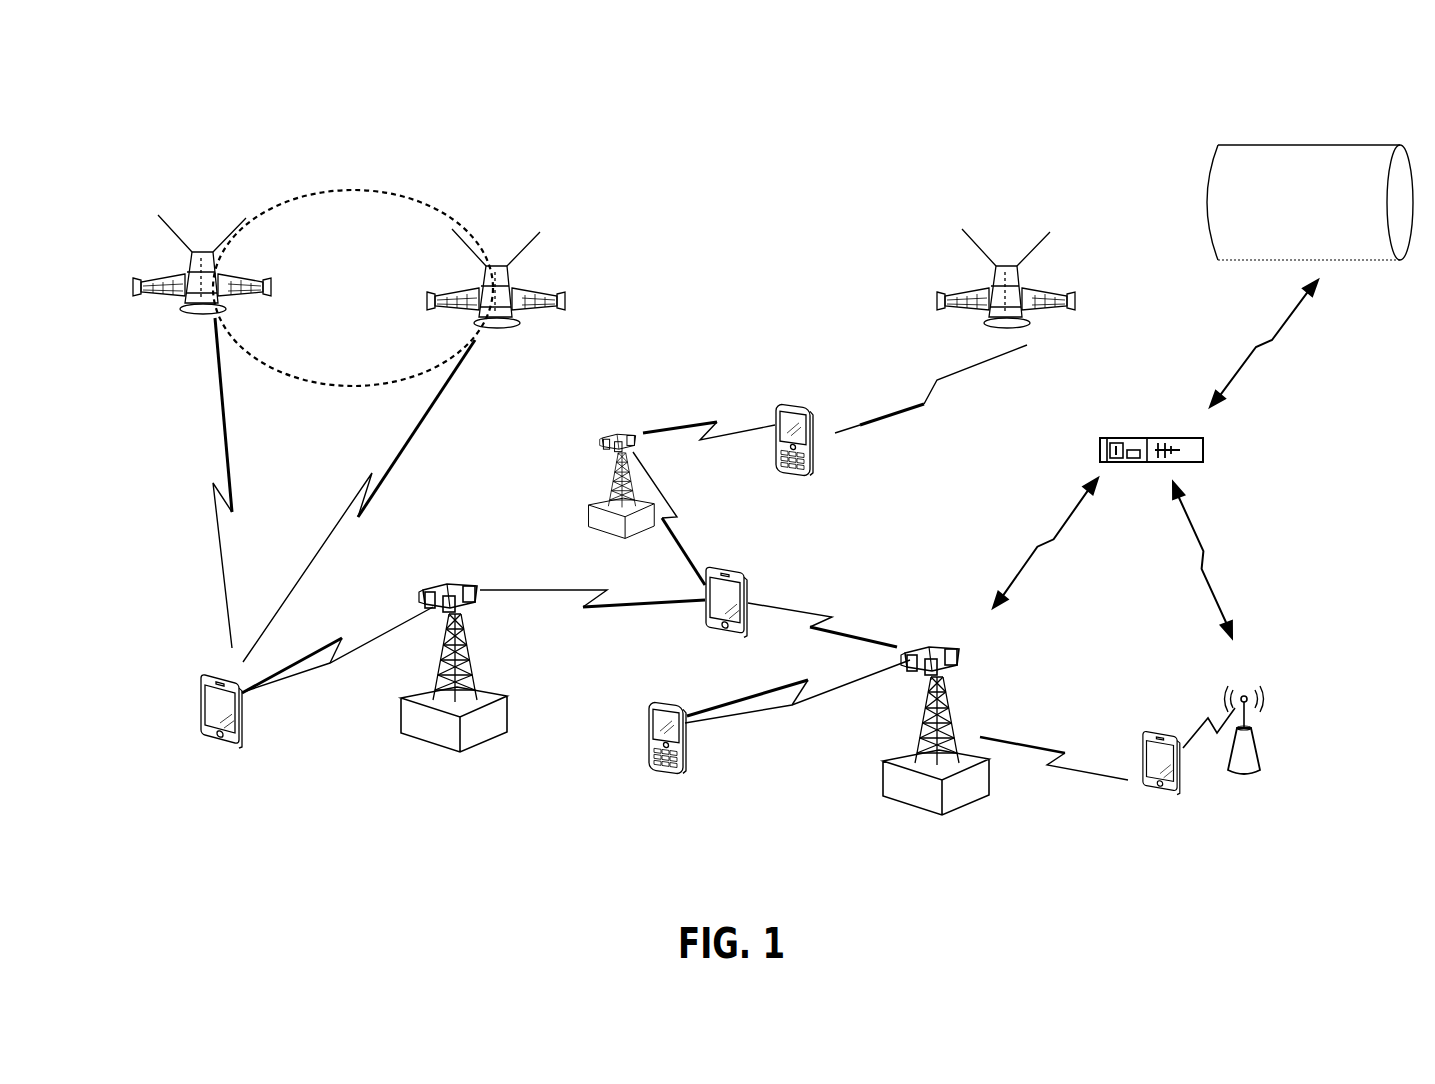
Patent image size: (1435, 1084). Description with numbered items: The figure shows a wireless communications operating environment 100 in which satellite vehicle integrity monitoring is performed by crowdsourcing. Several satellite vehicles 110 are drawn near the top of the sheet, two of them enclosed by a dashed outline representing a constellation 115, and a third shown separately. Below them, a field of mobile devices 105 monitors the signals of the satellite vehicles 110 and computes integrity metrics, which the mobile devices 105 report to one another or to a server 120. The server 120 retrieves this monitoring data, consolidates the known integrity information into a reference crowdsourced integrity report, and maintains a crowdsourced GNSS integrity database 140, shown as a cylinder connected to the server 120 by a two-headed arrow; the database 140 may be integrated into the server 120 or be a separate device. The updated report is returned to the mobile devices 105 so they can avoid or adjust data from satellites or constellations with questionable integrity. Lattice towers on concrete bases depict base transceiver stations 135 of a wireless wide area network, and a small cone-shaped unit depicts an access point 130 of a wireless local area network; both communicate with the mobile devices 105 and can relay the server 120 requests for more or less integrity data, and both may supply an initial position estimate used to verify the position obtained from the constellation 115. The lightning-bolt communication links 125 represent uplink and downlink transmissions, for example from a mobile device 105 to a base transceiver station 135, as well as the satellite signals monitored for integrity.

The operating environment 100 is at (912, 85).
The mobile devices 105 is at (855, 422).
The satellite vehicles 110 is at (162, 237).
The constellation 115 is at (437, 173).
The server 120 is at (1192, 419).
The communication links 125 is at (342, 646).
The access point 130 is at (1309, 804).
The base transceiver station 135 is at (592, 513).
The crowdsourced GNSS integrity database 140 is at (1290, 245).